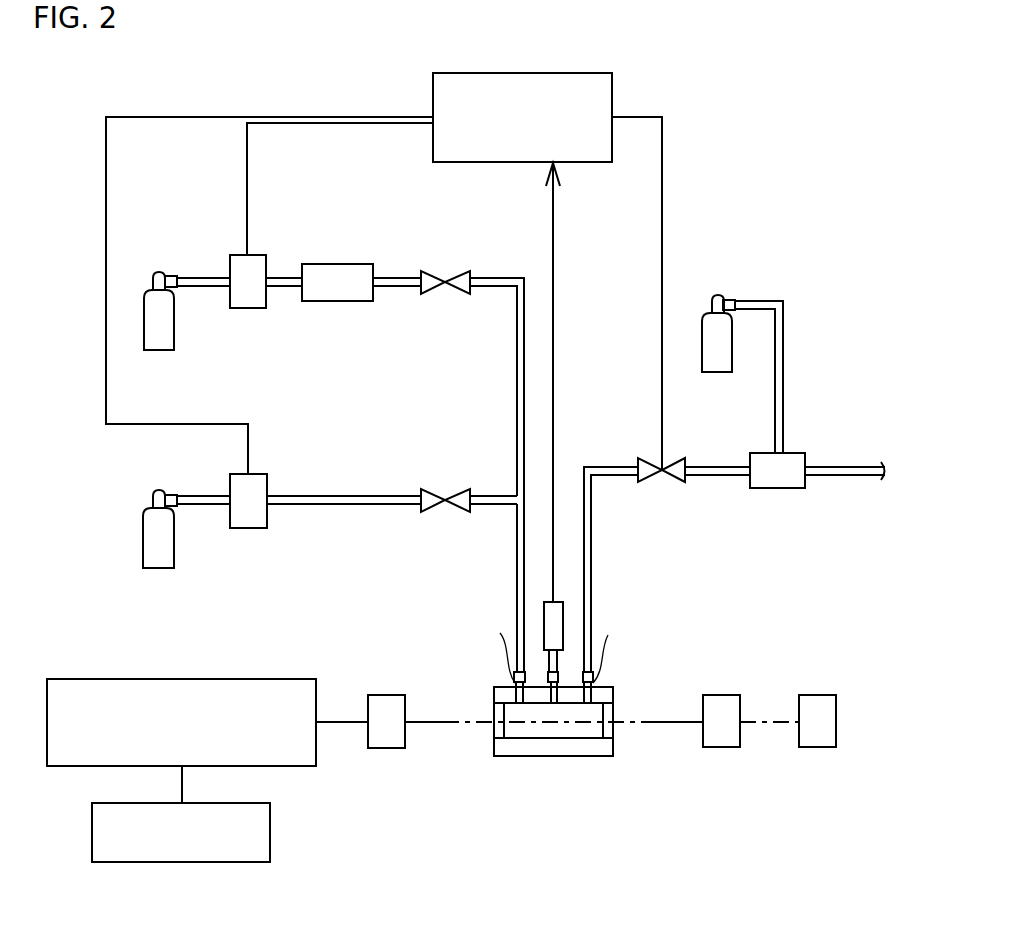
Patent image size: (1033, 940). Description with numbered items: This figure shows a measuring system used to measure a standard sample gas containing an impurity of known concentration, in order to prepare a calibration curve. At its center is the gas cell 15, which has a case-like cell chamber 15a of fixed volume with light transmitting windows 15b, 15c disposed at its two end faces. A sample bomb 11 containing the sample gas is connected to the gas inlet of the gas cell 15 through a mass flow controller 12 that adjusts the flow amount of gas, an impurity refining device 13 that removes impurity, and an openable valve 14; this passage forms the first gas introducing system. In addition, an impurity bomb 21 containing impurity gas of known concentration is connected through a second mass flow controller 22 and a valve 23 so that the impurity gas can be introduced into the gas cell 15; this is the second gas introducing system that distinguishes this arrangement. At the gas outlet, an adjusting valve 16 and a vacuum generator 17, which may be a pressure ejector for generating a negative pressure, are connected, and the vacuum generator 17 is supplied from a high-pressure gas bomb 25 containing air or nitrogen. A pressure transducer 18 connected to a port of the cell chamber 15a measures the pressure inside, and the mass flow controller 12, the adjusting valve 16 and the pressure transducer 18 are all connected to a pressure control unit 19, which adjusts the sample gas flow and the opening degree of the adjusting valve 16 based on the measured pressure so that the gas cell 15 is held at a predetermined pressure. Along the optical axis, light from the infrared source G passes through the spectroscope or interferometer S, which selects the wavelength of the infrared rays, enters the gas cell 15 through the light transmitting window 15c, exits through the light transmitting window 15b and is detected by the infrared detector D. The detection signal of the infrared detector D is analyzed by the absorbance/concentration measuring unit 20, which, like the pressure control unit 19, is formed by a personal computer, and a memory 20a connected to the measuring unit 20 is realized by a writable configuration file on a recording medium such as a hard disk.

The sample bomb 11 is at (174, 335).
The mass flow controller 12 is at (257, 255).
The impurity refining device 13 is at (345, 264).
The openable valve 14 is at (452, 271).
The gas cell 15 is at (523, 757).
The cell chamber 15a is at (563, 715).
The light transmitting window 15b is at (500, 718).
The light transmitting window 15c is at (608, 717).
The adjusting valve 16 is at (670, 483).
The vacuum generator 17 is at (778, 488).
The pressure transducer 18 is at (557, 602).
The pressure control unit 19 is at (570, 73).
The absorbance/concentration measuring unit 20 is at (223, 679).
The memory 20a is at (203, 862).
The impurity bomb 21 is at (174, 553).
The mass flow controller 22 is at (258, 474).
The valve 23 is at (452, 489).
The high-pressure gas bomb 25 is at (718, 372).
The infrared detector D is at (387, 695).
The spectroscope S is at (720, 695).
The infrared source G is at (817, 695).